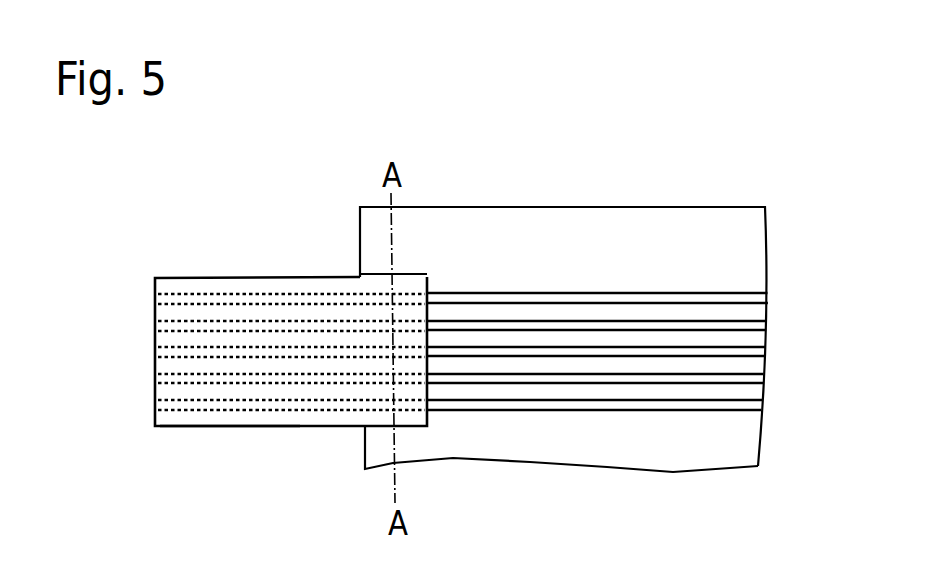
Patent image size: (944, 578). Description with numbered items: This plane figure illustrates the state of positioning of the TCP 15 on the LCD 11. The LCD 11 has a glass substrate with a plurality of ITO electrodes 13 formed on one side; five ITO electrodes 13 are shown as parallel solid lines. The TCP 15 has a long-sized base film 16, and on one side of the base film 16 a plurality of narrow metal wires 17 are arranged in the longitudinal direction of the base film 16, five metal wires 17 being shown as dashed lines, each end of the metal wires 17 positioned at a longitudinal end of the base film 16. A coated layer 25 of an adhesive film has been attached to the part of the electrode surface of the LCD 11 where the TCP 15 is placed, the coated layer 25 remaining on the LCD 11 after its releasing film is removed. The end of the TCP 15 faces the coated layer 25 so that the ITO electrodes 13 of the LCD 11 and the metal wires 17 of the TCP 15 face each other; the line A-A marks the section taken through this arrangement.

The LCD 11 is at (757, 199).
The ITO electrodes 13 is at (768, 295).
The TCP 15 is at (157, 428).
The base film 16 is at (222, 418).
The metal wires 17 is at (211, 289).
The coated layer 25 is at (361, 275).